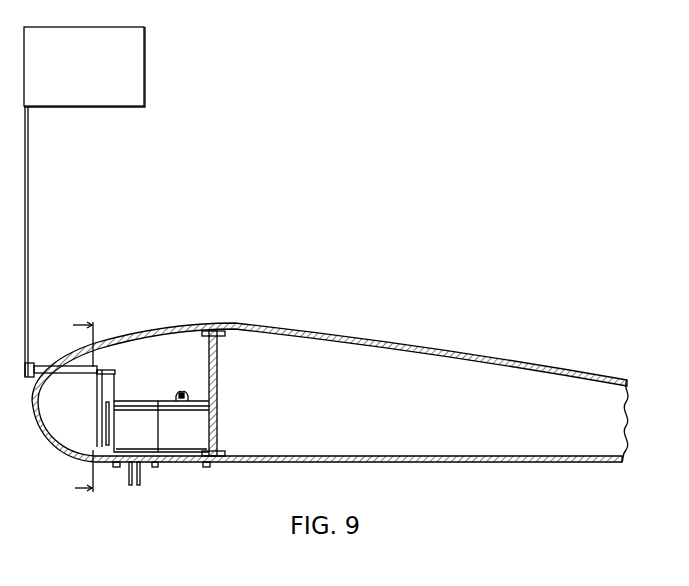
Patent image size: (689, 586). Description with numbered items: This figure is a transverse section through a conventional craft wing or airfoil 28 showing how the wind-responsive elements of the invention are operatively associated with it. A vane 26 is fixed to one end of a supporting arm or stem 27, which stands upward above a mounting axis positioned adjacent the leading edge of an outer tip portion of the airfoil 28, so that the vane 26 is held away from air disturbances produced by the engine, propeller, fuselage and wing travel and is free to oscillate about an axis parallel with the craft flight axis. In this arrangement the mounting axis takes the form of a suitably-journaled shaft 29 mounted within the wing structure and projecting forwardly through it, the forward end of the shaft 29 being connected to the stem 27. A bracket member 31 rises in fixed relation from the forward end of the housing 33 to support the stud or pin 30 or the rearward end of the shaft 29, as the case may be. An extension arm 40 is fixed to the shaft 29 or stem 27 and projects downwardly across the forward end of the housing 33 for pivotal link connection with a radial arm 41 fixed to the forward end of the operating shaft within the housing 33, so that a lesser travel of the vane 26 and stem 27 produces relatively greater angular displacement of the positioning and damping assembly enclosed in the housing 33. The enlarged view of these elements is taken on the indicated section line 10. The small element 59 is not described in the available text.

The section line 10 is at (73, 407).
The vane 26 is at (84, 67).
The supporting arm or stem 27 is at (29, 190).
The craft wing or airfoil 28 is at (258, 327).
The shaft 29 is at (80, 374).
The stud or pin 30 is at (106, 371).
The bracket member 31 is at (116, 390).
The housing 33 is at (161, 426).
The extension arm 40 is at (101, 417).
The radial arm 41 is at (109, 430).
The fitting 59 is at (183, 391).